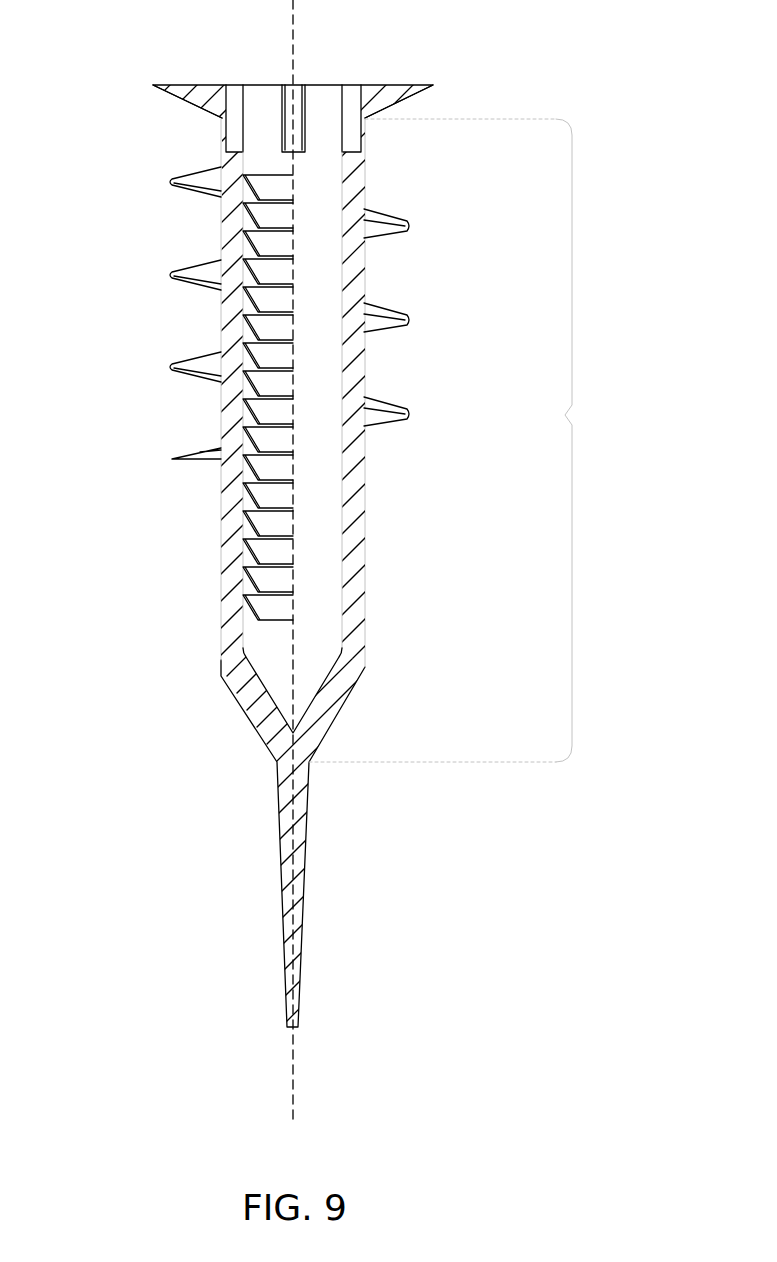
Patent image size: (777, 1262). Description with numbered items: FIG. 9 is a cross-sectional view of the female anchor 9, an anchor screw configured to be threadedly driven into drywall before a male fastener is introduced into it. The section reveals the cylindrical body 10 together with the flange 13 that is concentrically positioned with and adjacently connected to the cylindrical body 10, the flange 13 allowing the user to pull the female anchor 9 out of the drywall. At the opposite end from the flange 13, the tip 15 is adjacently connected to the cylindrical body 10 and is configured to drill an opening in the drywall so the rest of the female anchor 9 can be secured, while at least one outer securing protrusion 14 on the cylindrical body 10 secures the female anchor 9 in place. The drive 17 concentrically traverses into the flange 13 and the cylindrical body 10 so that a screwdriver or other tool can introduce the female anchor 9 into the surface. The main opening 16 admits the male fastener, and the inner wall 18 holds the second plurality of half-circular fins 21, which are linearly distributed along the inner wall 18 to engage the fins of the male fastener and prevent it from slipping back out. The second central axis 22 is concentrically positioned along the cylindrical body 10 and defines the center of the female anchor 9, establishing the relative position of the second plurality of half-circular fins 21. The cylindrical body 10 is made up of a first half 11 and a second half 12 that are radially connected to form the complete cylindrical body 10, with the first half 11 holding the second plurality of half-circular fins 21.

The female anchor 9 is at (90, 478).
The cylindrical body 10 is at (467, 440).
The first half 11 is at (228, 603).
The second half 12 is at (358, 630).
The flange 13 is at (420, 90).
The outer securing protrusion 14 is at (172, 272).
The tip 15 is at (283, 865).
The main opening 16 is at (265, 94).
The drive 17 is at (350, 91).
The inner wall 18 is at (246, 648).
The second plurality of half-circular fins 21 is at (288, 300).
The second central axis 22 is at (293, 1070).